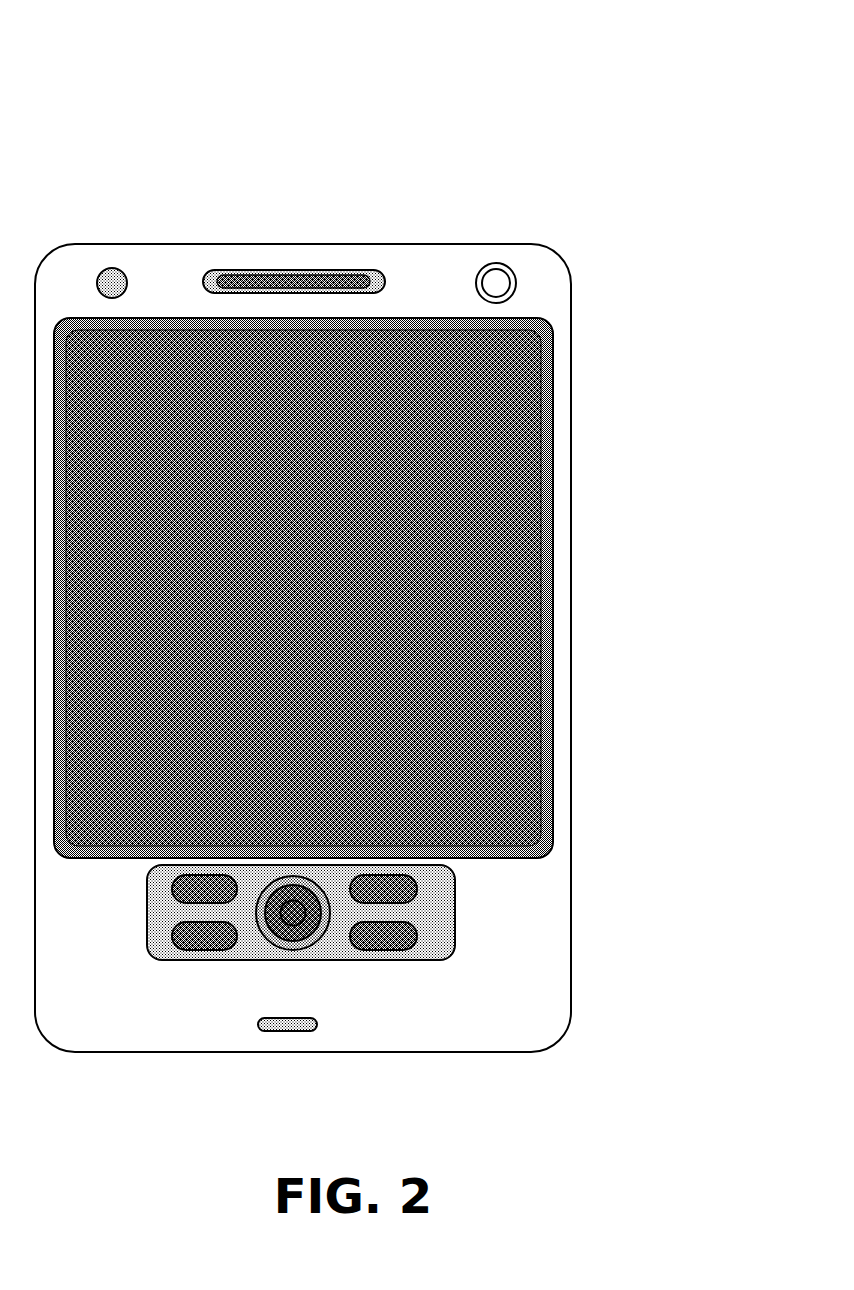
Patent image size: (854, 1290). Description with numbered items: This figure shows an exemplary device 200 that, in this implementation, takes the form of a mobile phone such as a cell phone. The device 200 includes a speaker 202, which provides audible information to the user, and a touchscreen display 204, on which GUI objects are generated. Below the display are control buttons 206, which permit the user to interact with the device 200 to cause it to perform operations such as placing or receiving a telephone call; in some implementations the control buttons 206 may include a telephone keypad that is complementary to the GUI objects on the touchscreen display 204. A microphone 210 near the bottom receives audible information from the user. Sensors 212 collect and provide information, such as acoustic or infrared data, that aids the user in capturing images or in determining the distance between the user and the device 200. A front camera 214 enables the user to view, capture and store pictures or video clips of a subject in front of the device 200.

The device 200 is at (355, 130).
The speaker 202 is at (299, 270).
The touchscreen display 204 is at (467, 318).
The control buttons 206 is at (455, 913).
The microphone 210 is at (317, 1024).
The sensors 212 is at (516, 283).
The front camera 214 is at (112, 268).